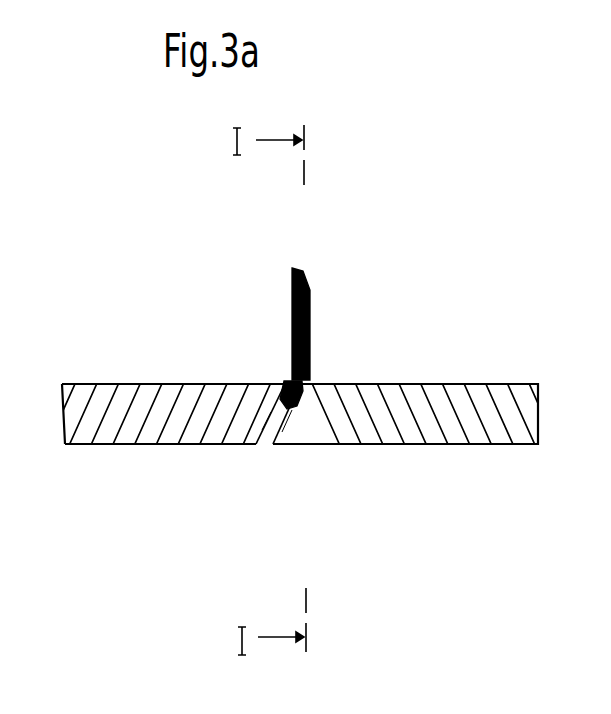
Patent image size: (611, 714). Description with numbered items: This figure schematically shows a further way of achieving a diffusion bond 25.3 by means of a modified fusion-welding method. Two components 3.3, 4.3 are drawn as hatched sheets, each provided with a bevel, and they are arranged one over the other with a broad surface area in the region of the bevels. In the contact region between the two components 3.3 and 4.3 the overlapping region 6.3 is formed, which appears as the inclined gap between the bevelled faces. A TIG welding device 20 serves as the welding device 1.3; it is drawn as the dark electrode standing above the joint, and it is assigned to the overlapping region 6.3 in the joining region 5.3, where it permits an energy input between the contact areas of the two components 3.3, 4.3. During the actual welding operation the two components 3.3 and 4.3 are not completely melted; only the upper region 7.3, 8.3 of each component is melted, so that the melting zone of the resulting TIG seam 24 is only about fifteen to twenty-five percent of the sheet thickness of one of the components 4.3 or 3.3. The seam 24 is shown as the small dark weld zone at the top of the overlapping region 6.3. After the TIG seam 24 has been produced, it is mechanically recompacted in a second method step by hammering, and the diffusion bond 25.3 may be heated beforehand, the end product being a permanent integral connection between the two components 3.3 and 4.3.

The welding device 1.3 is at (317, 265).
The TIG welding device 20 is at (310, 310).
The upper region 8.3 is at (347, 381).
The TIG seam 24 is at (288, 372).
The upper region 7.3 is at (280, 384).
The component 3.3 is at (147, 417).
The joining region 5.3 is at (258, 432).
The diffusion bond 25.3 is at (289, 412).
The overlapping region 6.3 is at (300, 440).
The component 4.3 is at (460, 408).